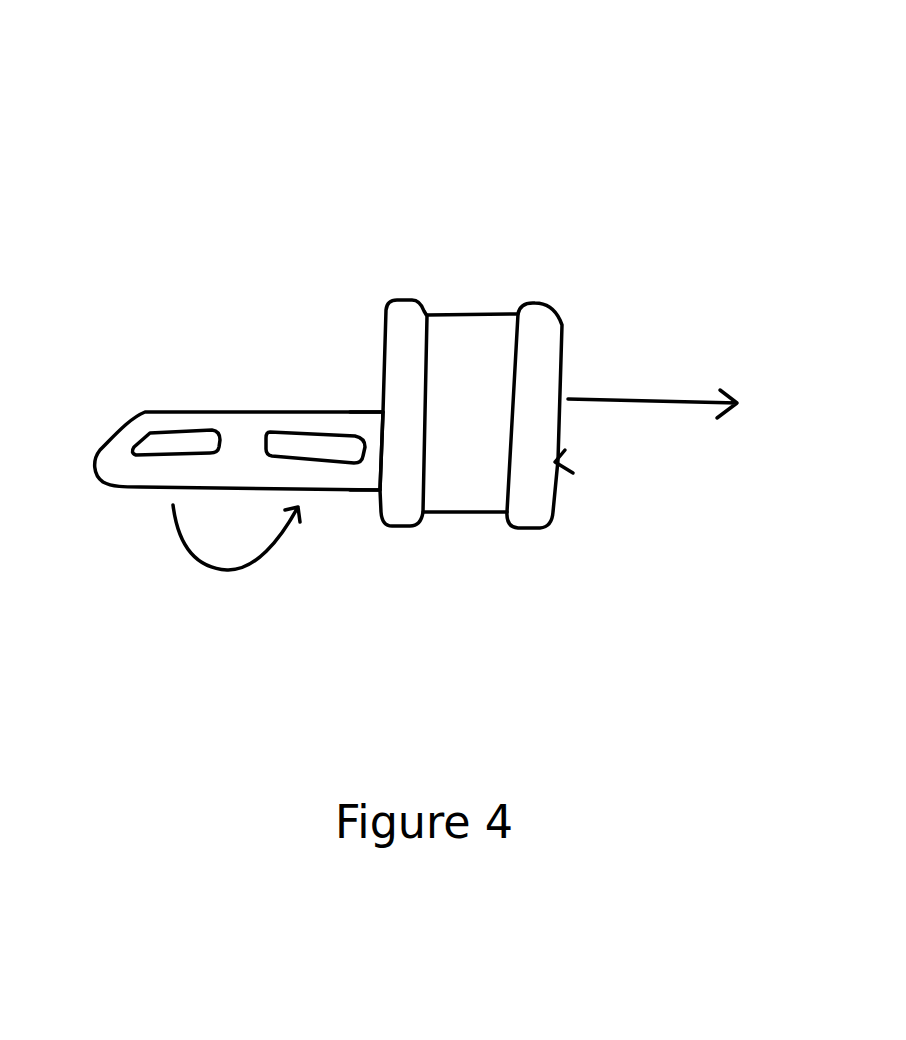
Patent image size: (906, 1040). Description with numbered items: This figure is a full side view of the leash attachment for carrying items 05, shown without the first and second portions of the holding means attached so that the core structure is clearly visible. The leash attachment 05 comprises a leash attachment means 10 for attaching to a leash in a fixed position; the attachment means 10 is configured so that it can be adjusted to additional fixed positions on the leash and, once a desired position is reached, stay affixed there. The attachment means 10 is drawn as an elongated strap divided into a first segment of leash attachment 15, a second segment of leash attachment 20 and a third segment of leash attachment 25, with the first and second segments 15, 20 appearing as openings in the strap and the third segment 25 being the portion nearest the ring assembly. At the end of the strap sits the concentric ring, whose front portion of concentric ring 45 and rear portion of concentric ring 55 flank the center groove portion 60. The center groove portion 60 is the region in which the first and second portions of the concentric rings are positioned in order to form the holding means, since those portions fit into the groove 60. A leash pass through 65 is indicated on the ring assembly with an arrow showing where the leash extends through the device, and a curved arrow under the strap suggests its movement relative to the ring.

The leash attachment for carrying items 05 is at (288, 165).
The leash attachment means 10 is at (127, 472).
The first segment of leash attachment 15 is at (161, 437).
The second segment of leash attachment 20 is at (242, 437).
The third segment of leash attachment 25 is at (372, 462).
The front portion of concentric ring 45 is at (545, 323).
The rear portion of concentric ring 55 is at (405, 307).
The center groove portion 60 is at (479, 331).
The leash pass through 65 is at (555, 462).